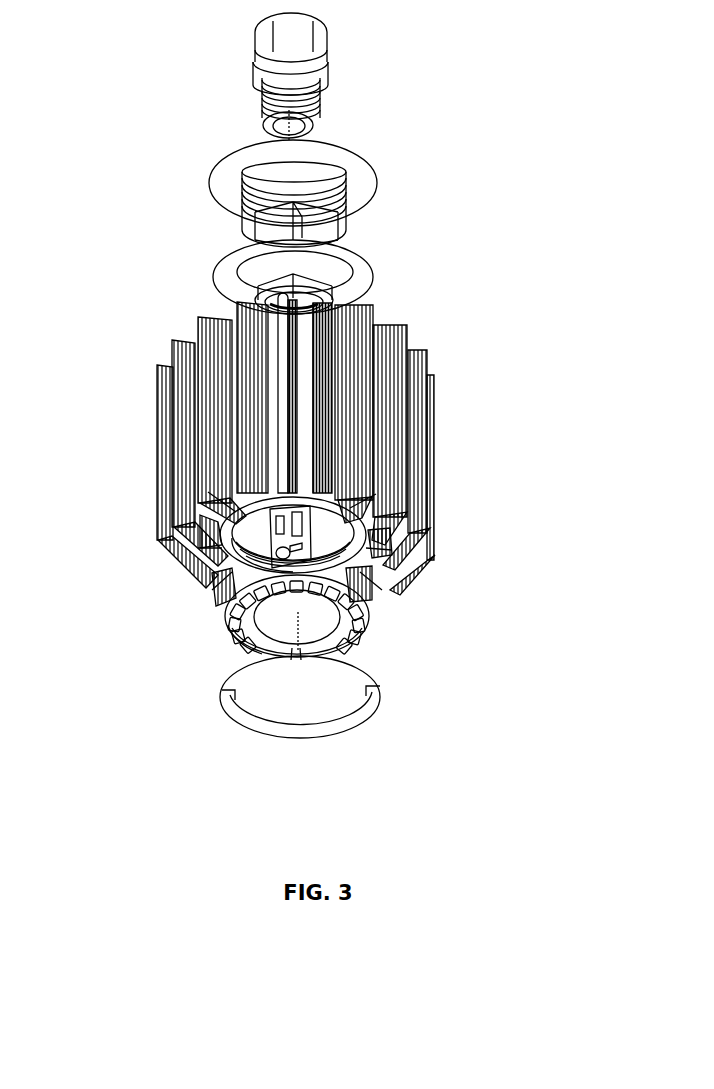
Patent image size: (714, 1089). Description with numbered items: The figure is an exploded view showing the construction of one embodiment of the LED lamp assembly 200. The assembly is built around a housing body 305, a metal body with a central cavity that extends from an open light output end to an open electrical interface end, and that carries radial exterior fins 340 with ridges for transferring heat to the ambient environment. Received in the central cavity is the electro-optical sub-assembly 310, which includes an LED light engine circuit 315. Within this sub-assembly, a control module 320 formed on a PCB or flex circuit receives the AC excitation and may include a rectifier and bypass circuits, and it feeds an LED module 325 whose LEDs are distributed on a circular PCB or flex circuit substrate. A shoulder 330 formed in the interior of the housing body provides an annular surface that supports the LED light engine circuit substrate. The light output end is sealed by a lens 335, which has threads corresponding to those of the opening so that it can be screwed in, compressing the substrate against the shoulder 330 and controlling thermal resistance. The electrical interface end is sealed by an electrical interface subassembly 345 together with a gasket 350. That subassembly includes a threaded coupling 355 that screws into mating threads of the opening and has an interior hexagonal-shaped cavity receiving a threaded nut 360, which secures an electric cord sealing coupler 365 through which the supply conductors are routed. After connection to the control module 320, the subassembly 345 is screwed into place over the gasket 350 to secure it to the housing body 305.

The LED lamp assembly 200 is at (52, 227).
The housing body 305 is at (368, 504).
The electro-optical sub-assembly 310 is at (460, 698).
The LED light engine circuit 315 is at (402, 624).
The control module 320 is at (274, 542).
The LED module 325 is at (242, 630).
The shoulder 330 is at (250, 534).
The lens 335 is at (300, 697).
The radial exterior fins 340 is at (425, 356).
The electrical interface subassembly 345 is at (461, 244).
The gasket 350 is at (332, 256).
The threaded coupling 355 is at (358, 191).
The threaded nut 360 is at (327, 294).
The electric cord sealing coupler 365 is at (330, 54).